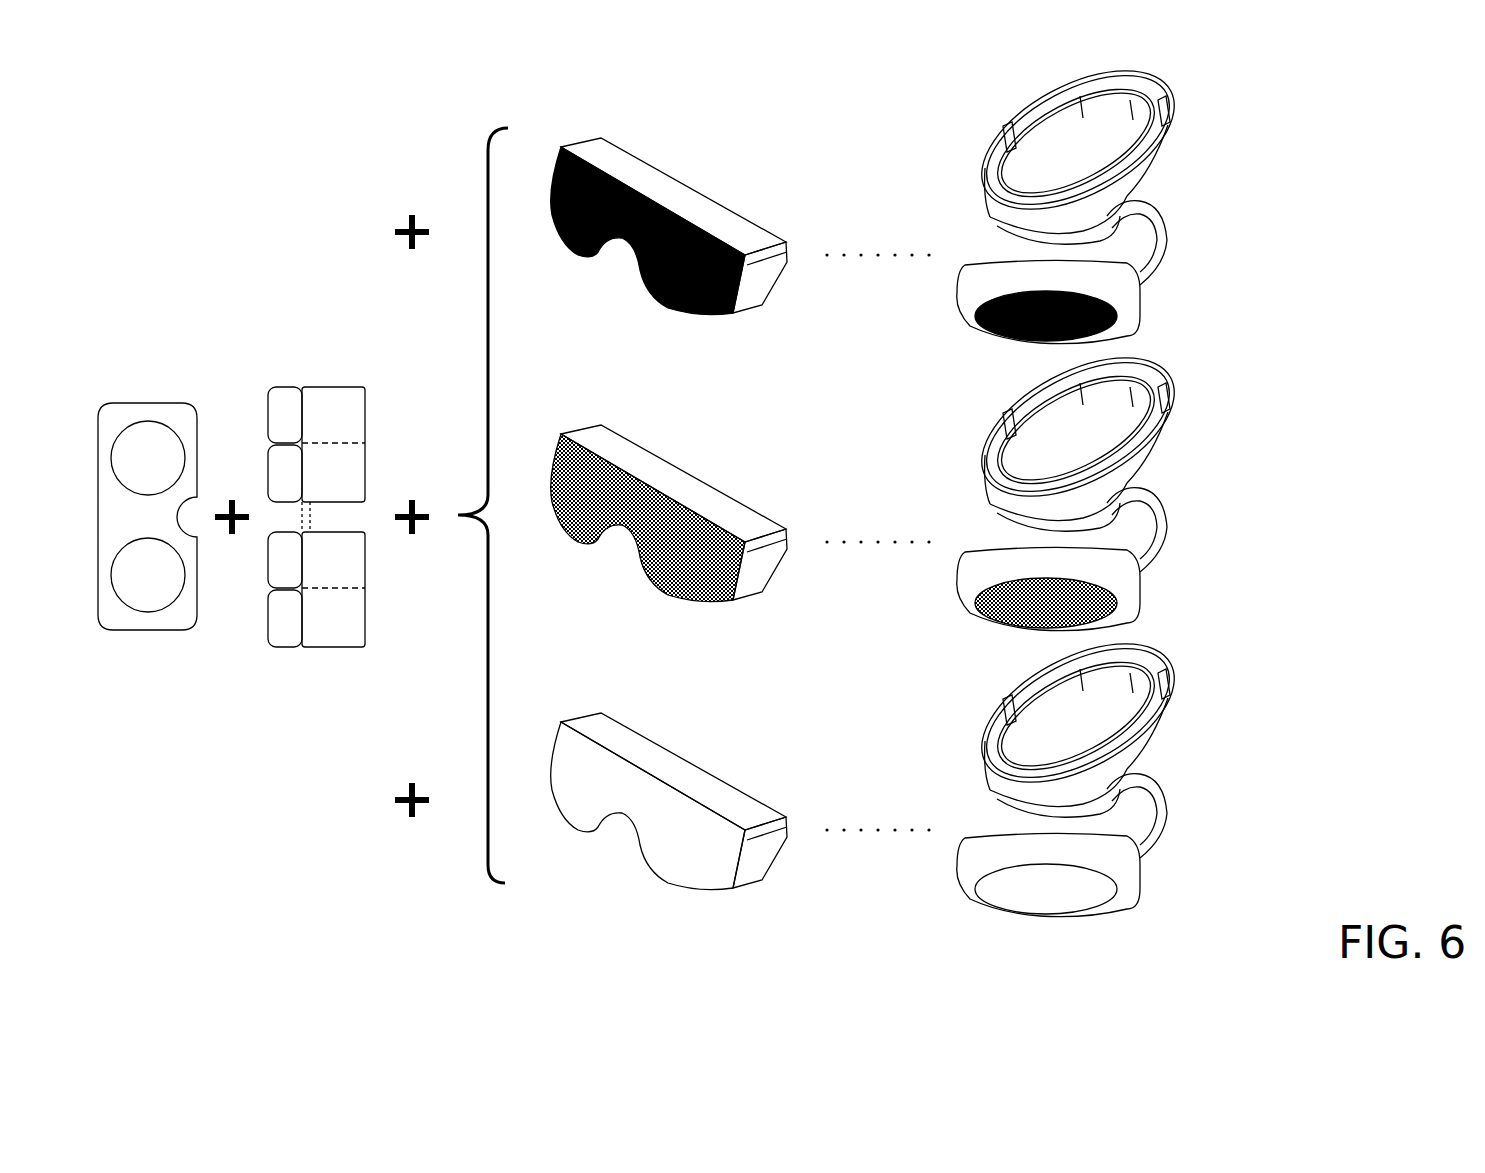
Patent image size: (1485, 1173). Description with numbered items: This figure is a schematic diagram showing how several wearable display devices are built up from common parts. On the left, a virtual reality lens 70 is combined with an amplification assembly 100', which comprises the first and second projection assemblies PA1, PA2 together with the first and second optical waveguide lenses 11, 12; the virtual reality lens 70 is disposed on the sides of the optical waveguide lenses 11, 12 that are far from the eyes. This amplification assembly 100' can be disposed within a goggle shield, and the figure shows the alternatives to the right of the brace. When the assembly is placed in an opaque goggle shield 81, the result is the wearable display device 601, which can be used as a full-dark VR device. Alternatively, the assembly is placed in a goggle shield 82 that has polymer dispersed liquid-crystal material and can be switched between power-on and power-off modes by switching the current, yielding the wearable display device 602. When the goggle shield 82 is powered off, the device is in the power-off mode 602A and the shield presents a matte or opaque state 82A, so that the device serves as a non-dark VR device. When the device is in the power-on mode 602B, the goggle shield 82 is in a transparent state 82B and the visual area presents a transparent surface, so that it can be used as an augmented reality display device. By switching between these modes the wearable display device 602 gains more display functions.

The virtual reality lens 70 is at (147, 402).
The amplification assembly 100' is at (305, 467).
The second optical waveguide lens 12 is at (332, 387).
The first optical waveguide lens 11 is at (333, 648).
The second projection assembly PA2 is at (288, 384).
The first projection assembly PA1 is at (287, 652).
The opaque goggle shield 81 is at (688, 195).
The goggle shield 82 is at (832, 620).
The matte or opaque state 82A is at (727, 600).
The transparent state 82B is at (700, 763).
The wearable display device 601 is at (1167, 240).
The wearable display device 602 is at (1329, 505).
The power-off mode 602A is at (1165, 528).
The power-on mode 602B is at (1165, 812).